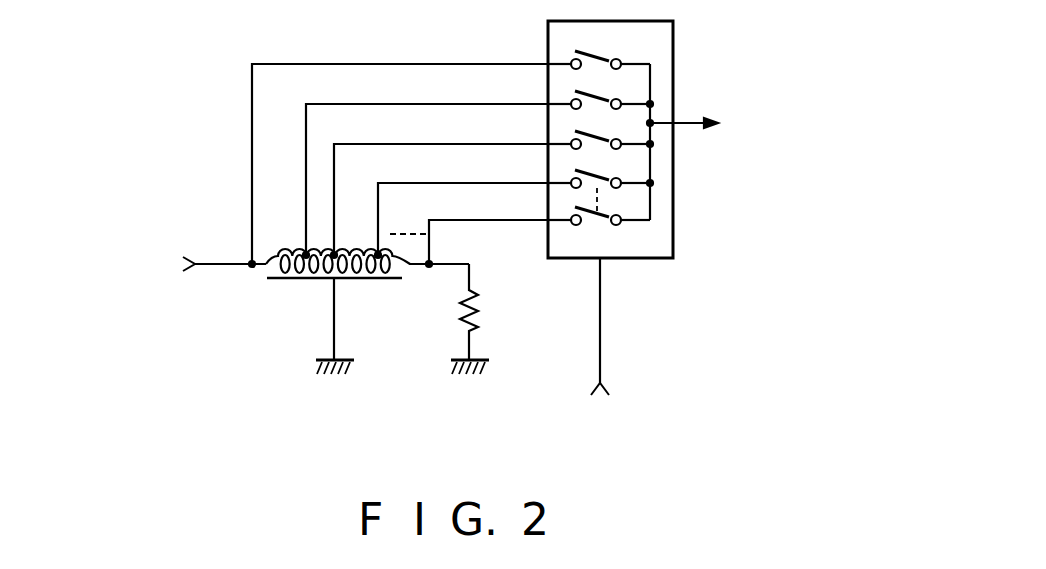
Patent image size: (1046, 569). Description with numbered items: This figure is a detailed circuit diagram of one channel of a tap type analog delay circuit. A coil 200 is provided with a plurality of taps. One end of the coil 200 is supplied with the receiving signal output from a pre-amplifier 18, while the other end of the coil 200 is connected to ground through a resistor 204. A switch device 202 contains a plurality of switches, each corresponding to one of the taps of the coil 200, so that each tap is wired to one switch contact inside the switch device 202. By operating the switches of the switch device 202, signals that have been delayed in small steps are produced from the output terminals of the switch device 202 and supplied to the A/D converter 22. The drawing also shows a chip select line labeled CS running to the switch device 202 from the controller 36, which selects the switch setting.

The pre-amplifier 18 is at (146, 266).
The coil 200 is at (268, 271).
The switch device 202 is at (674, 237).
The resistor 204 is at (480, 299).
The A/D converter (ADC) 22 is at (734, 123).
The controller 36 is at (753, 357).